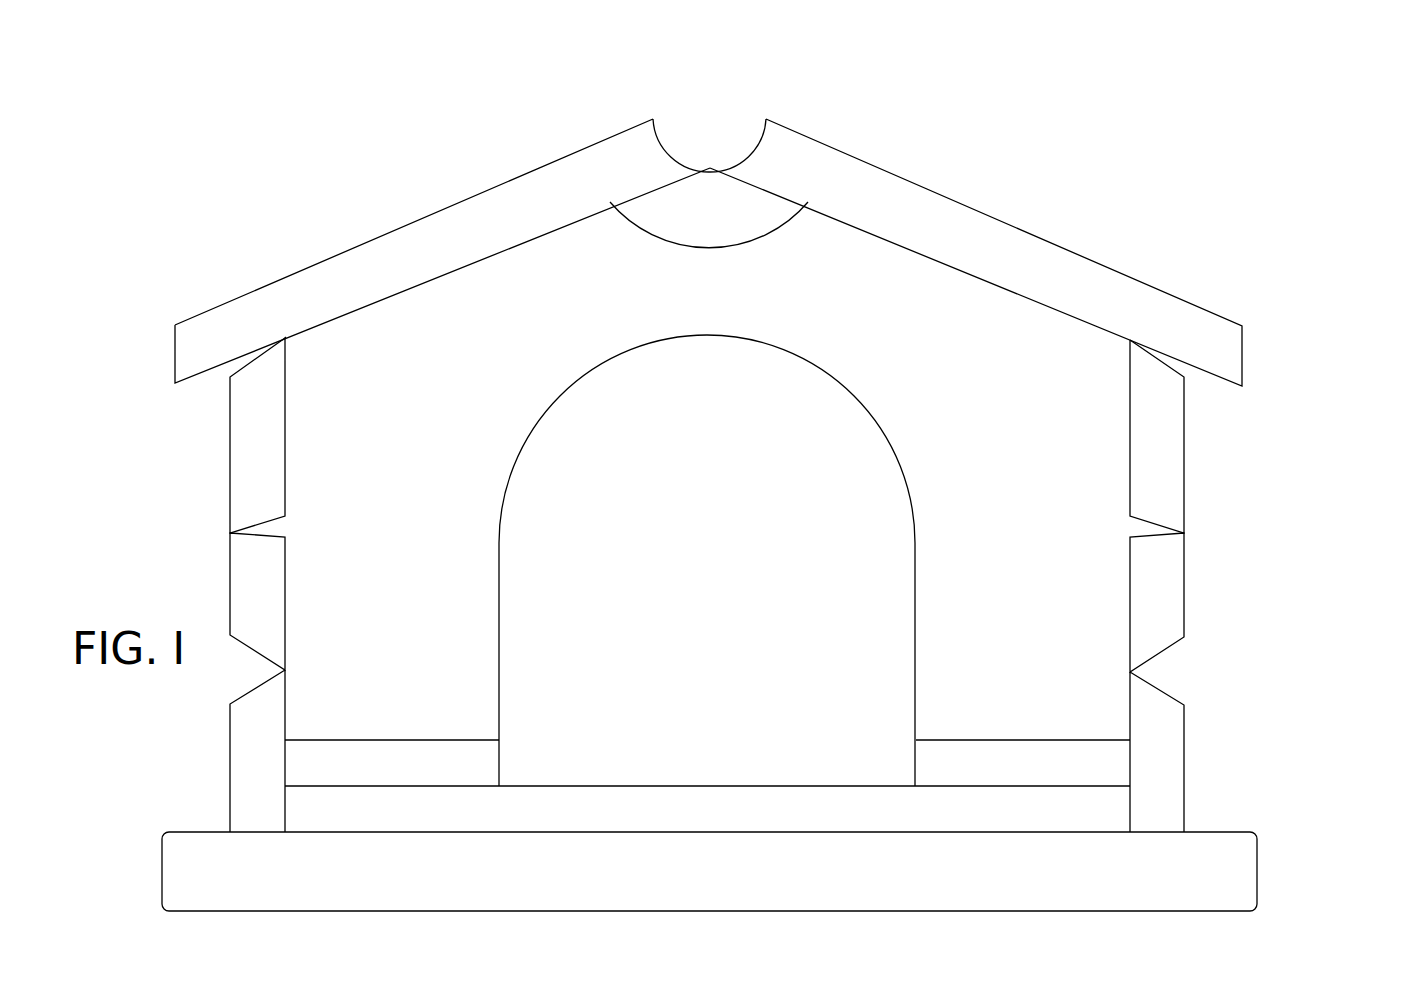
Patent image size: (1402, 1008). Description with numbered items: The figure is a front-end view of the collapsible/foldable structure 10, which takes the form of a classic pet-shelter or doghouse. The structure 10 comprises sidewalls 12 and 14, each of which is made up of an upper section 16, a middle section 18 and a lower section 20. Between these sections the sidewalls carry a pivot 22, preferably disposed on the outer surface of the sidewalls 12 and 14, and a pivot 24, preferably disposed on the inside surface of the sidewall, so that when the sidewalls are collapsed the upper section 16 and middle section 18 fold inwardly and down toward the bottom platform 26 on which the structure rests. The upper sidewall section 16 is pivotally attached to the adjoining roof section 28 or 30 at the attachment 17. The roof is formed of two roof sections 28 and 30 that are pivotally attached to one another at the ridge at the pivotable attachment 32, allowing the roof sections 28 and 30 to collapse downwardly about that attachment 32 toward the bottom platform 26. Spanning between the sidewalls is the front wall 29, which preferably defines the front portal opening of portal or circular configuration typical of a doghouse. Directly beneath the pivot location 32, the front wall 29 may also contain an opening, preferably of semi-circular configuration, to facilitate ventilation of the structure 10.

The collapsible/foldable structure 10 is at (1212, 569).
The sidewall 12 is at (1212, 471).
The sidewall 14 is at (262, 584).
The upper section 16 is at (265, 453).
The pivotal attachment 17 is at (297, 343).
The middle section 18 is at (268, 580).
The lower section 20 is at (265, 710).
The pivot 22 is at (1192, 540).
The pivot 24 is at (1128, 670).
The bottom platform 26 is at (1215, 838).
The roof section 28 is at (395, 252).
The front wall 29 is at (913, 593).
The roof section 30 is at (971, 234).
The pivotable attachment 32 is at (715, 137).